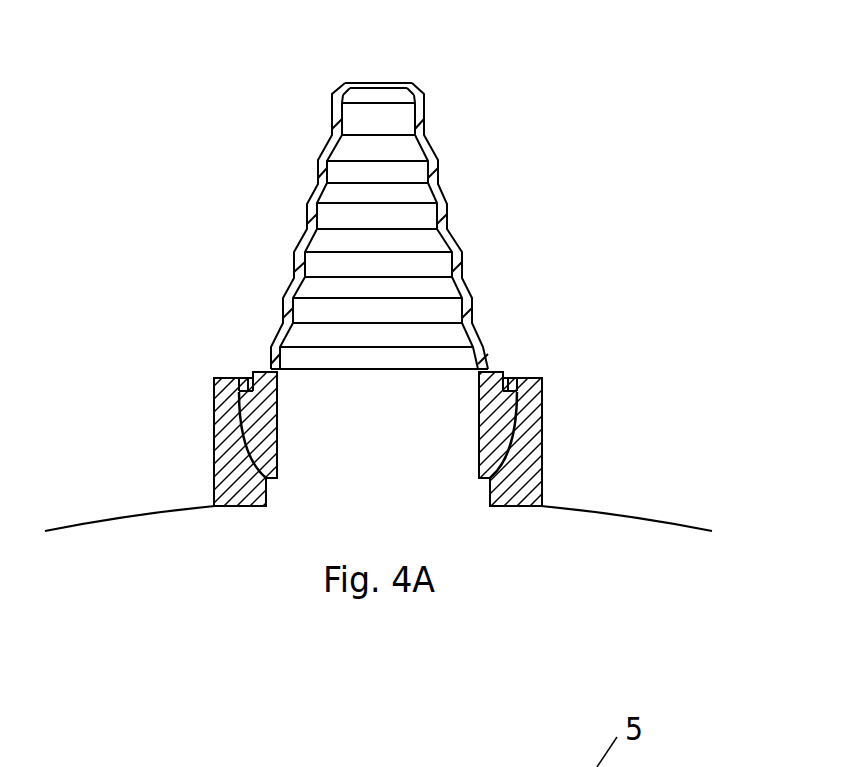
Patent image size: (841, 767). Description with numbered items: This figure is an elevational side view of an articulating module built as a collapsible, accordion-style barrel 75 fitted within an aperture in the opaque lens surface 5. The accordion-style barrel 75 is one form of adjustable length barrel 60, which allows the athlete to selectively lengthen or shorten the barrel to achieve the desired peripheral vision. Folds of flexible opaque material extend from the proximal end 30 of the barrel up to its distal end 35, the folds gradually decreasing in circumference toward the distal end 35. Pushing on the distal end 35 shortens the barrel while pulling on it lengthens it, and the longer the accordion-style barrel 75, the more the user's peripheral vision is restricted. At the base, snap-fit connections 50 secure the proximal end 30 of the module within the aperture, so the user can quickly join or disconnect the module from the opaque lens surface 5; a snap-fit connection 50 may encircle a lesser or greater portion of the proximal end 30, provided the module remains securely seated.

The opaque lens surface 5 is at (613, 510).
The proximal end 30 is at (355, 420).
The distal end 35 is at (363, 83).
The snap-fit connection 50 is at (215, 378).
The adjustable length barrel 60 is at (290, 278).
The accordion-style barrel 75 is at (375, 260).